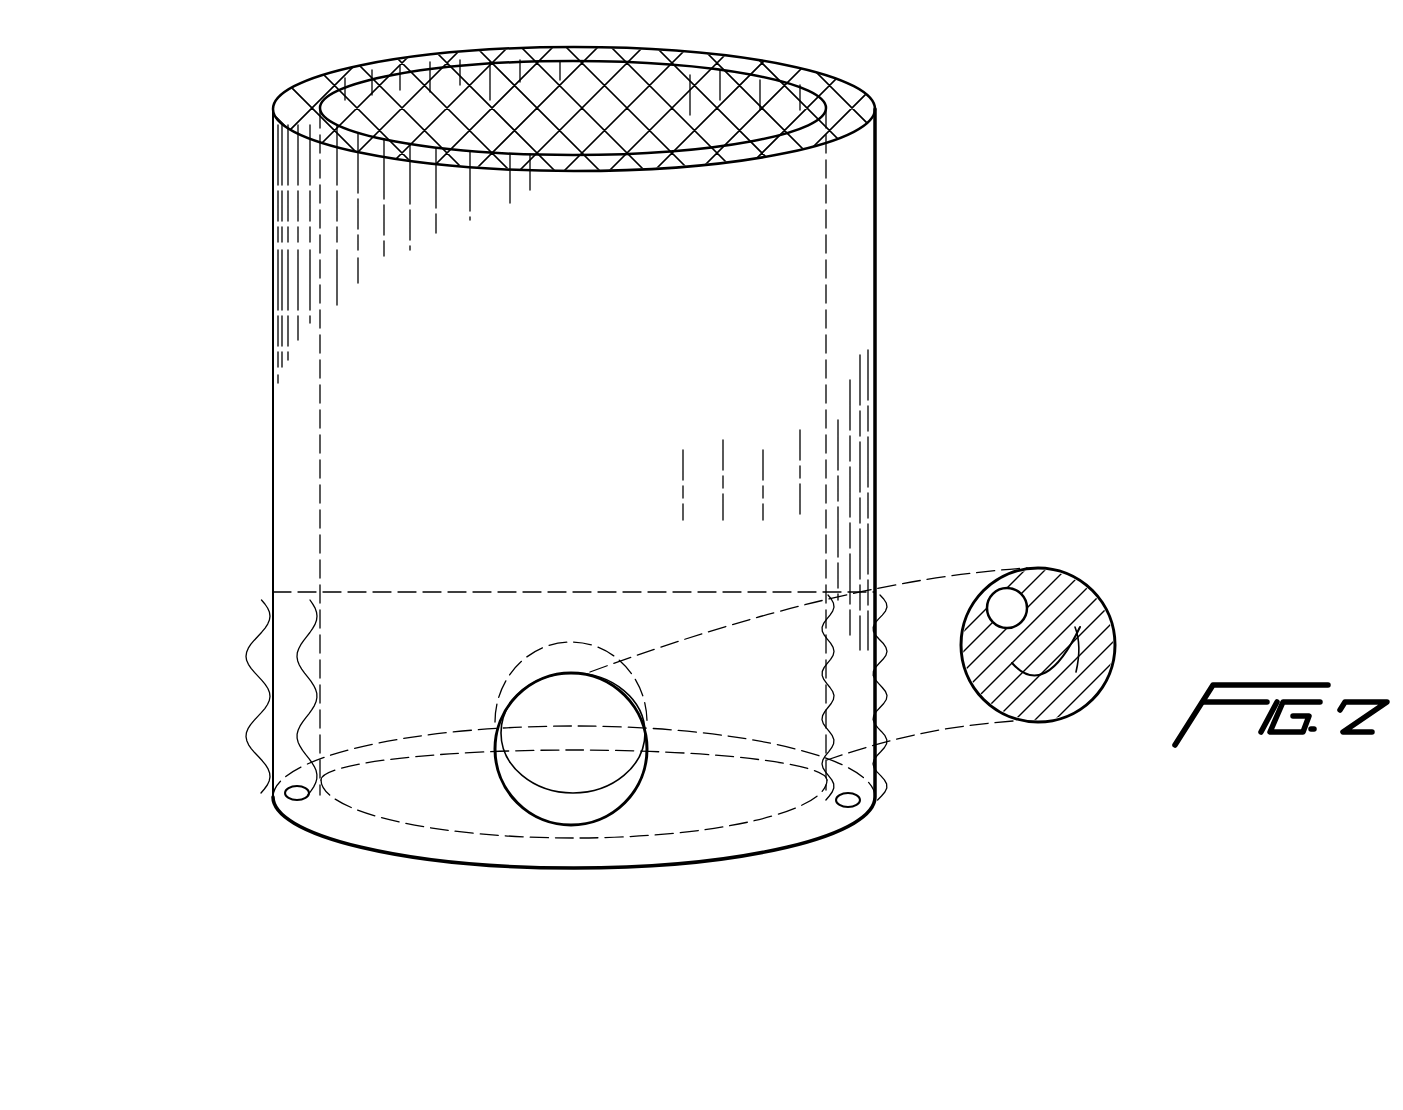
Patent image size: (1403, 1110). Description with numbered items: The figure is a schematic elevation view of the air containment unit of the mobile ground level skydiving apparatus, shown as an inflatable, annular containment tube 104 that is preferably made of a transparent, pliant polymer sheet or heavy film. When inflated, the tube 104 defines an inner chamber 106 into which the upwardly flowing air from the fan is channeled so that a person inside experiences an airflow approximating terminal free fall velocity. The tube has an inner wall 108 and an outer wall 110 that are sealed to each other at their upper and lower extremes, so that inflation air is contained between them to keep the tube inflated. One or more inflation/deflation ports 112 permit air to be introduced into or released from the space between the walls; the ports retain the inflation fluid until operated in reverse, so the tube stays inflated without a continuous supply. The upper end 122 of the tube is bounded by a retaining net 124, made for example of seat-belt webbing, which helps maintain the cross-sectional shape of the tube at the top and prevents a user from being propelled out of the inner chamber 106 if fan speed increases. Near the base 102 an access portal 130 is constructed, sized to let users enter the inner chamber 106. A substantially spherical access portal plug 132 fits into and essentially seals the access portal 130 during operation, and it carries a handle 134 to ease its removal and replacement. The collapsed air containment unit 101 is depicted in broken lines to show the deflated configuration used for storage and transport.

The collapsed air containment unit 101 is at (278, 627).
The base 102 is at (217, 758).
The annular containment tube 104 is at (287, 358).
The inner chamber 106 is at (571, 435).
The inner wall 108 is at (317, 443).
The outer wall 110 is at (273, 492).
The inflation/deflation ports 112 is at (297, 800).
The upper end 122 is at (913, 112).
The retaining net 124 is at (786, 70).
The access portal 130 is at (513, 750).
The access portal plug 132 is at (1057, 580).
The handle 134 is at (1075, 675).